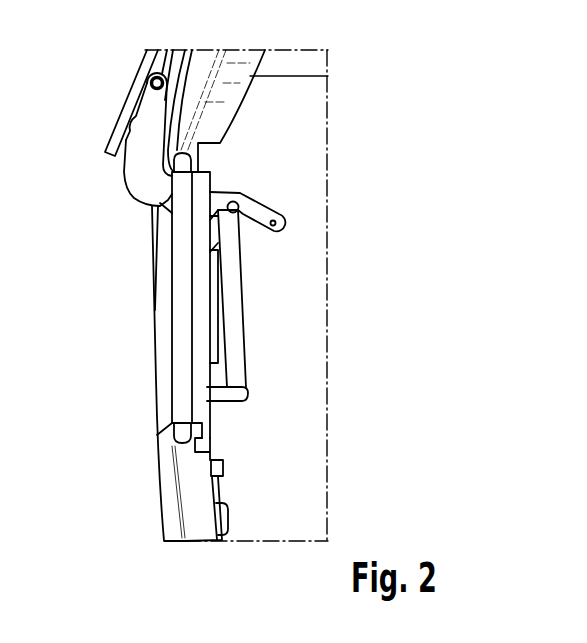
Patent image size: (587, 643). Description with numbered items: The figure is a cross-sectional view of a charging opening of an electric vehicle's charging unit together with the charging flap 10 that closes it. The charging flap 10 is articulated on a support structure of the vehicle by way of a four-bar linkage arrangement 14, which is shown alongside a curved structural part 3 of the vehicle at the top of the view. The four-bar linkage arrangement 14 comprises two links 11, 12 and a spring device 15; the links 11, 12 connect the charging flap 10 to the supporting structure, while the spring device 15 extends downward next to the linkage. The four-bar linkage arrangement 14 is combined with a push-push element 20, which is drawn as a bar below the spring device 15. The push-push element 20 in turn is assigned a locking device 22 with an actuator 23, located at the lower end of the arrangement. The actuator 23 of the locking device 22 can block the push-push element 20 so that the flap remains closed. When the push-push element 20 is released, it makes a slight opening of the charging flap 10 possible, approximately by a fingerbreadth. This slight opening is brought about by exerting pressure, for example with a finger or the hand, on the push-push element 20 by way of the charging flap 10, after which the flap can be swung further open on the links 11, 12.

The frame part 3 is at (222, 83).
The charging flap 10 is at (135, 90).
The link 11 is at (133, 127).
The link 12 is at (131, 172).
The four-bar linkage arrangement 14 is at (106, 188).
The spring device 15 is at (230, 310).
The push-push element 20 is at (238, 393).
The locking device 22 is at (237, 488).
The actuator 23 is at (223, 470).